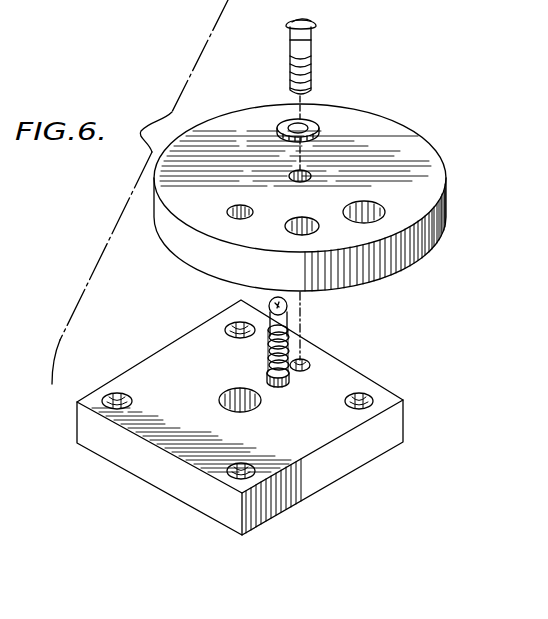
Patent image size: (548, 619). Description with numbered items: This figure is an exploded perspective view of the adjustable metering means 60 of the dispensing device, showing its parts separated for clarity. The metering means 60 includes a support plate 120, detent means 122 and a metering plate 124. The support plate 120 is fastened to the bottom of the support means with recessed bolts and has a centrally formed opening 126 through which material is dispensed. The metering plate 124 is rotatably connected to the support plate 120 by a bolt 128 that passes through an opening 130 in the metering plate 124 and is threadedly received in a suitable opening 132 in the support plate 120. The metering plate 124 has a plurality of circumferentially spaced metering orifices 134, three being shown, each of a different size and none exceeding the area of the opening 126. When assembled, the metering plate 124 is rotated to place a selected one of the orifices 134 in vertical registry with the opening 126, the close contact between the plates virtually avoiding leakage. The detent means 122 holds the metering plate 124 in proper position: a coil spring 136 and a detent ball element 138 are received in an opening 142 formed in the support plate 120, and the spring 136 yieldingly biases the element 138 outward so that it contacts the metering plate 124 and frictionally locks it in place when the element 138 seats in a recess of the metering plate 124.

The adjustable metering means 60 is at (371, 94).
The support plate 120 is at (343, 463).
The detent means 122 is at (244, 302).
The metering plate 124 is at (399, 266).
The centrally formed opening 126 is at (239, 412).
The bolt 128 is at (308, 52).
The opening 130 is at (306, 170).
The opening 132 is at (312, 362).
The metering orifices 134 is at (348, 210).
The coil spring 136 is at (268, 348).
The detent ball element 138 is at (288, 308).
The opening 142 is at (283, 383).